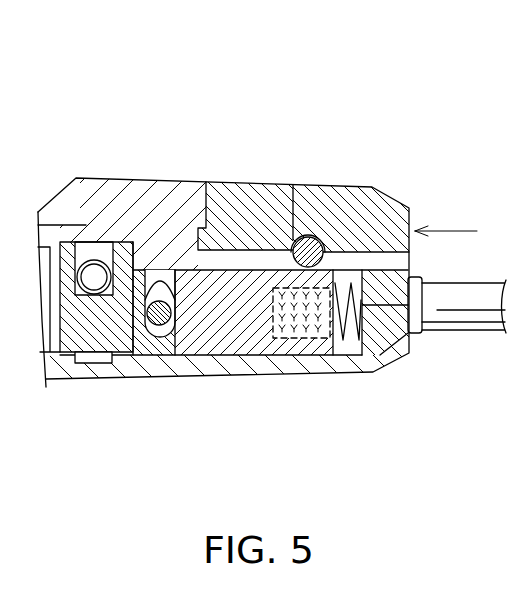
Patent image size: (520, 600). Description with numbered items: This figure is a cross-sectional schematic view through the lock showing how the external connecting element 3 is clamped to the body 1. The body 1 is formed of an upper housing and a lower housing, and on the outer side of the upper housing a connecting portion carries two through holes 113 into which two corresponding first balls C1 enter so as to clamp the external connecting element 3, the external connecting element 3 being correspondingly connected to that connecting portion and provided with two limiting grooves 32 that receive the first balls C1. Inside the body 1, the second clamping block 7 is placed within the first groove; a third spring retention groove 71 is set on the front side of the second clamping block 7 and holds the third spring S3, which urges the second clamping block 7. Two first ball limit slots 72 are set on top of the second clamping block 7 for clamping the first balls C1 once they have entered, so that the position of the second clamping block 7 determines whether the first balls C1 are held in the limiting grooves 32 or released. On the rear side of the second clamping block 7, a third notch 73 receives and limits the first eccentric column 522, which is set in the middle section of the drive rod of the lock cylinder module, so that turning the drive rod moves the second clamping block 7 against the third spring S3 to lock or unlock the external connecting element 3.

The body 1 is at (100, 178).
The external connecting element 3 is at (348, 186).
The second clamping block 7 is at (234, 338).
The third spring retention groove 71 is at (303, 342).
The first ball limit slot 72 is at (290, 258).
The third notch 73 is at (190, 315).
The limiting groove 32 is at (318, 232).
The first ball C1 is at (306, 237).
The through hole 113 is at (365, 268).
The first eccentric column 522 is at (158, 326).
The third spring S3 is at (347, 290).